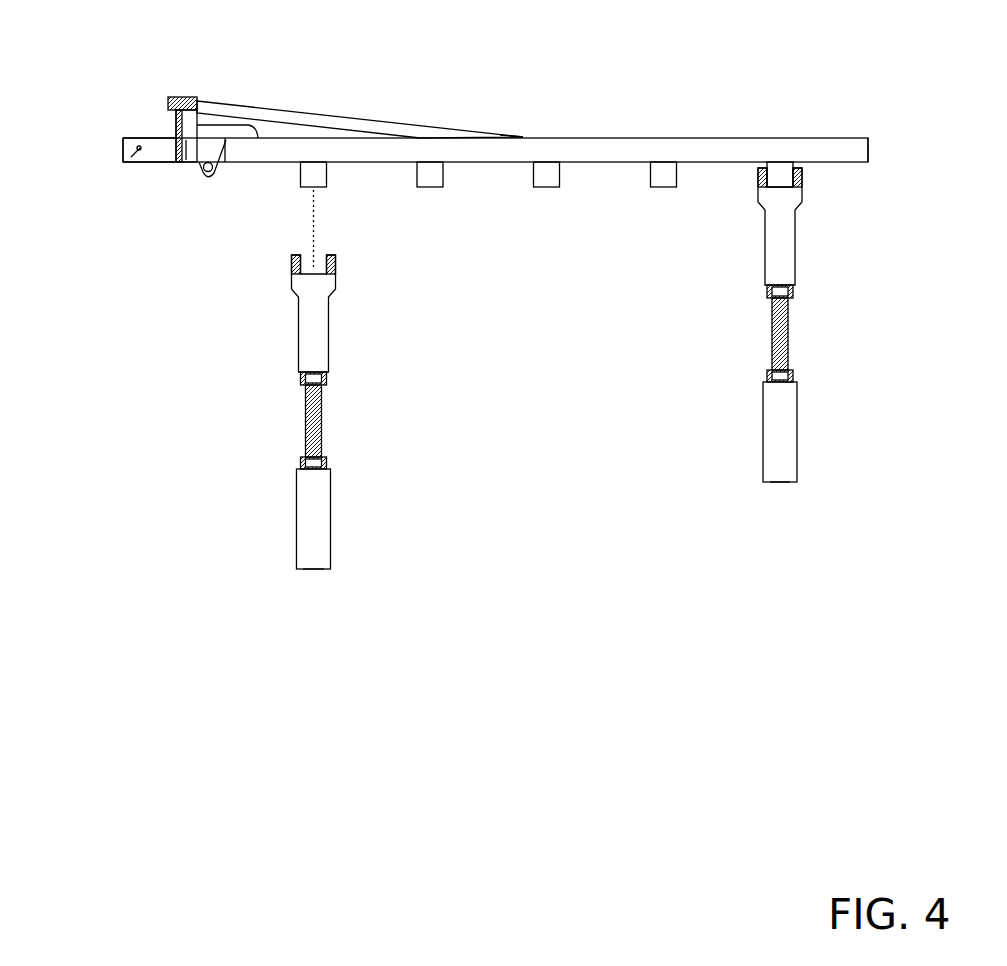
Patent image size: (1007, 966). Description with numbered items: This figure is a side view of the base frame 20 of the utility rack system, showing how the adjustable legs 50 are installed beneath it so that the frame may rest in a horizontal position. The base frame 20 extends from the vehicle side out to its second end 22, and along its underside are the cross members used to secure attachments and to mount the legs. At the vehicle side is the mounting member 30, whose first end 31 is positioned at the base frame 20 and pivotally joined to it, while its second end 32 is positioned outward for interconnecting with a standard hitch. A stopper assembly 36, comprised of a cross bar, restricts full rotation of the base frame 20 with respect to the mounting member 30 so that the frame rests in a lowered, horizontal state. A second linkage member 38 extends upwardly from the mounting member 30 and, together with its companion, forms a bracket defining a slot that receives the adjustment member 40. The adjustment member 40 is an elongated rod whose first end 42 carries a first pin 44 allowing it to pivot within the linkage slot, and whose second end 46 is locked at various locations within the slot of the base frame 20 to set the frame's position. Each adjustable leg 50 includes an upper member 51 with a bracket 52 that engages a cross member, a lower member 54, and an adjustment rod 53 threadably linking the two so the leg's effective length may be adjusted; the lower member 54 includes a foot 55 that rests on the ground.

The base frame 20 is at (652, 138).
The second end 22 is at (878, 143).
The mounting member 30 is at (123, 162).
The first end 31 is at (123, 137).
The second end 32 is at (255, 123).
The stopper assembly 36 is at (208, 195).
The second linkage member 38 is at (187, 147).
The adjustment member 40 is at (320, 110).
The first end 42 is at (163, 98).
The first pin 44 is at (187, 98).
The second end 46 is at (523, 137).
The adjustable leg 50 is at (588, 402).
The upper member 51 is at (330, 325).
The bracket 52 is at (318, 268).
The adjustment rod 53 is at (323, 420).
The lower member 54 is at (332, 538).
The foot 55 is at (312, 570).